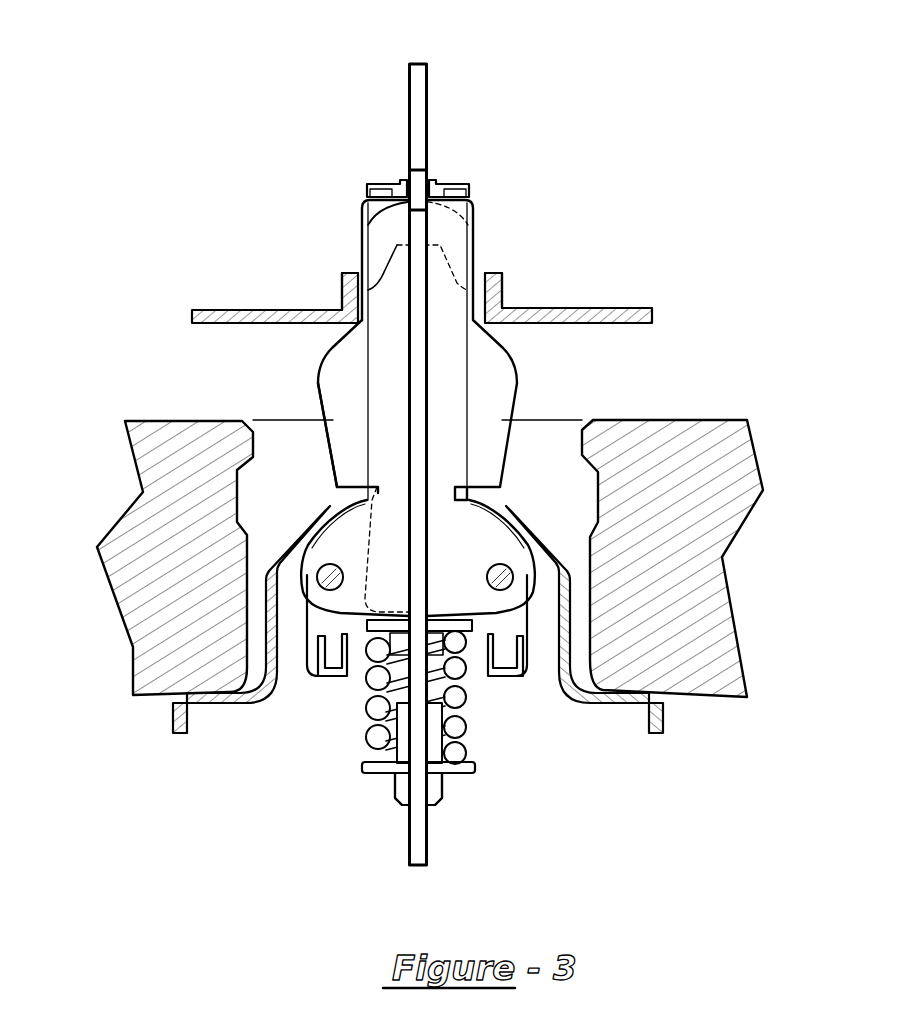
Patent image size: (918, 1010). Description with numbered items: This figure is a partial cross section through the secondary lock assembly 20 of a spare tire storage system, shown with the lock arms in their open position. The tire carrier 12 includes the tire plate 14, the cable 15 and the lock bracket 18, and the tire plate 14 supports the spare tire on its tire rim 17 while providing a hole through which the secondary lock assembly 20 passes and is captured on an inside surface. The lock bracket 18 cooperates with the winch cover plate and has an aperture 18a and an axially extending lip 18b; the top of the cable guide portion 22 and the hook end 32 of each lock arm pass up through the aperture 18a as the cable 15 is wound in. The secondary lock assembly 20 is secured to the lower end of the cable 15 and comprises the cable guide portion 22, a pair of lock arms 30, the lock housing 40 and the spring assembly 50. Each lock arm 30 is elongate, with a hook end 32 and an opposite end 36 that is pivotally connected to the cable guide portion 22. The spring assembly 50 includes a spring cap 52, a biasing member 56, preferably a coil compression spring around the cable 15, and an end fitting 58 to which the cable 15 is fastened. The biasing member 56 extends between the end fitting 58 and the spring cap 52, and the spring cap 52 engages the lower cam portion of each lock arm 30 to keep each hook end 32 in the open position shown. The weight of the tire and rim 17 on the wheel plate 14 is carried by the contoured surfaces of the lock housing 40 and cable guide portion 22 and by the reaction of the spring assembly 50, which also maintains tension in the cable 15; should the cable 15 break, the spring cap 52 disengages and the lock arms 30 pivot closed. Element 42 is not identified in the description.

The tire carrier 12 is at (127, 320).
The tire plate 14 is at (612, 700).
The cable 15 is at (408, 97).
The tire rim 17 is at (172, 625).
The lock bracket 18 is at (608, 307).
The aperture 18a is at (503, 290).
The axially extending lip 18b is at (350, 273).
The secondary lock assembly 20 is at (655, 355).
The cable guide portion 22 is at (522, 102).
The lock arms 30 is at (332, 358).
The hook end 32 is at (383, 223).
The opposite end 36 is at (455, 608).
The lock housing 40 is at (292, 480).
The shaft 42 is at (431, 183).
The spring assembly 50 is at (520, 750).
The spring cap 52 is at (458, 628).
The biasing member 56 is at (372, 703).
The end fitting 58 is at (372, 770).